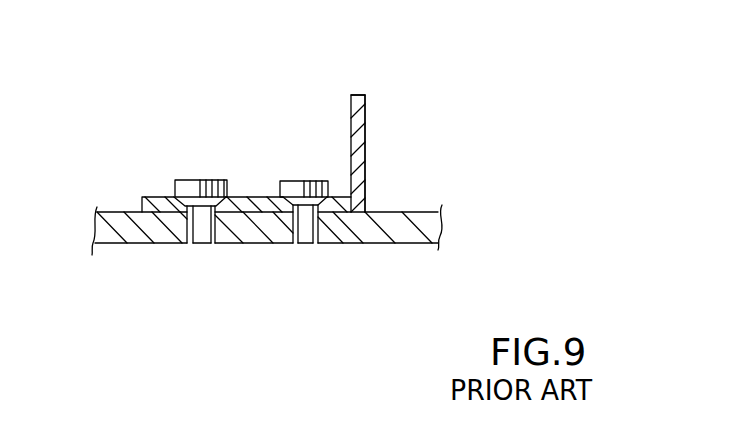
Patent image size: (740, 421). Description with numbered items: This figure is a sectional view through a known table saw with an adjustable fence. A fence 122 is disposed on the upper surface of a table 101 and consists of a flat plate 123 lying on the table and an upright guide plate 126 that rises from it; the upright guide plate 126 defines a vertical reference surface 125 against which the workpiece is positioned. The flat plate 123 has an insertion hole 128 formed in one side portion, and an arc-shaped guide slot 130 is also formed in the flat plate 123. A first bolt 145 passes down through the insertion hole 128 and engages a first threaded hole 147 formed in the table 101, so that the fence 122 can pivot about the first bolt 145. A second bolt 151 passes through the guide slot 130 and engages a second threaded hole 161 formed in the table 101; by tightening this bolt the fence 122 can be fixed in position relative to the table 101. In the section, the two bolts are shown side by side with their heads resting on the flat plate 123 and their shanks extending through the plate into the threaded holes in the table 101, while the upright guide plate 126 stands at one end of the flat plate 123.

The table 101 is at (407, 235).
The flat plate 123 is at (255, 197).
The upright guide plate 126 is at (365, 110).
The vertical reference surface 125 is at (366, 163).
The fence 122 is at (350, 92).
The second bolt 151 is at (190, 184).
The guide slot 130 is at (176, 192).
The second threaded hole 161 is at (195, 238).
The first bolt 145 is at (297, 190).
The insertion hole 128 is at (304, 240).
The first threaded hole 147 is at (314, 240).